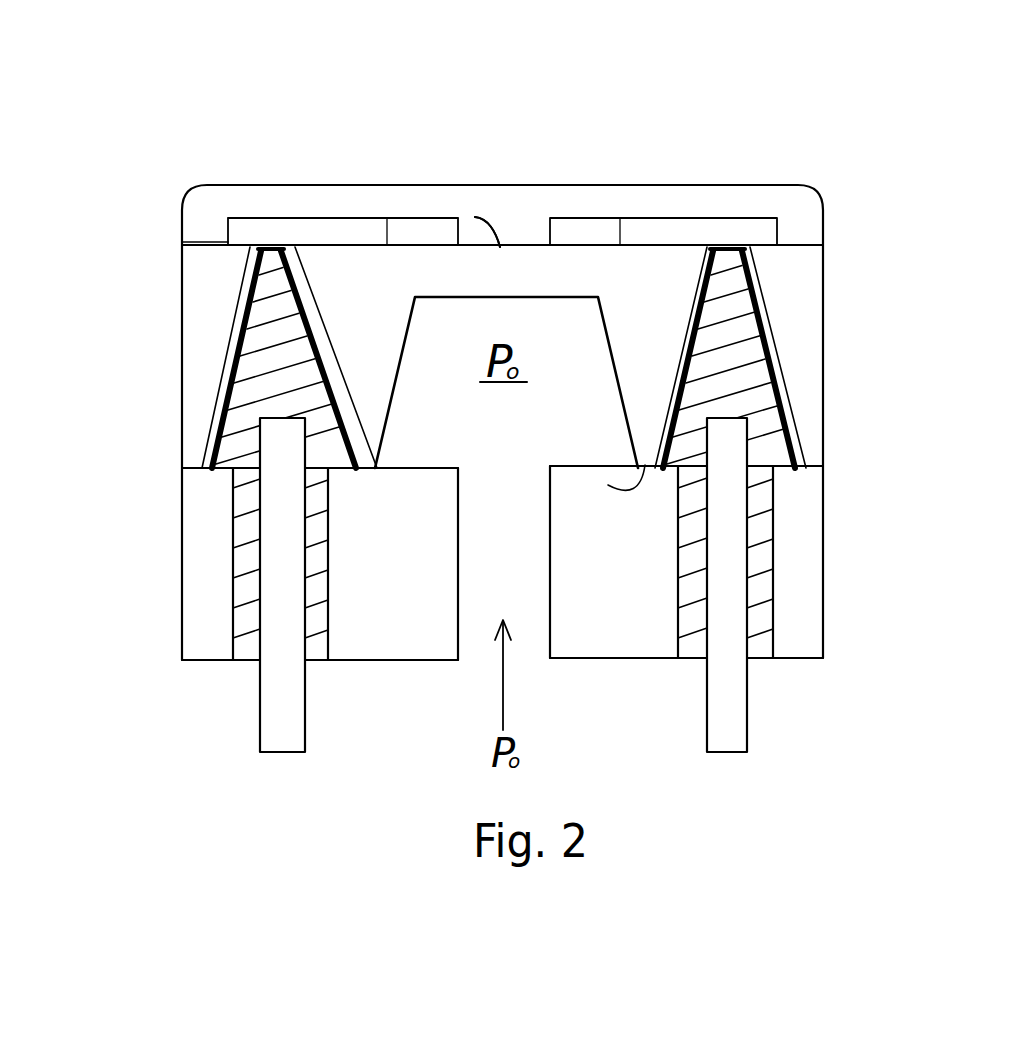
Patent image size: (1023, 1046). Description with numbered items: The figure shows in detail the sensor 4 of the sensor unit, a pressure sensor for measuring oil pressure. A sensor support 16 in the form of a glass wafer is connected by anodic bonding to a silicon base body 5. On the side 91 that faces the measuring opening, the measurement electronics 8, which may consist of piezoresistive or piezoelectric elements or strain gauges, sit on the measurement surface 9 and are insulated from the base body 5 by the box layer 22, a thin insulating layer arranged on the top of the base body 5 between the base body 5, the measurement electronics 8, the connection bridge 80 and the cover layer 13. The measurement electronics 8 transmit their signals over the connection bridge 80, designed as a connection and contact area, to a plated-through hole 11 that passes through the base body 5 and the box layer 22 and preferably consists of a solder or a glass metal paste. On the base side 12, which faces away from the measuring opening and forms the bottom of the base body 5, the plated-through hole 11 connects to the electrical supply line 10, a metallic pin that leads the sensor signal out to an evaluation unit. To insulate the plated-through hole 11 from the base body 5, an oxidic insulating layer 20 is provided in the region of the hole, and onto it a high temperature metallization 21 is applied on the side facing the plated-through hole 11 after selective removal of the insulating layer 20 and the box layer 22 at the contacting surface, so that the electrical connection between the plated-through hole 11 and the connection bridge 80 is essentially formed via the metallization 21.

The sensor 4 is at (852, 179).
The base body 5 is at (792, 288).
The measurement electronics 8 is at (587, 233).
The connection bridge 80 is at (327, 230).
The measurement surface 9 is at (497, 248).
The side facing the measuring opening 91 is at (574, 139).
The electrical supply line 10 is at (730, 495).
The plated-through hole 11 is at (248, 418).
The base side 12 is at (643, 467).
The cover layer 13 is at (243, 203).
The sensor support 16 is at (202, 503).
The insulating layer 20 is at (230, 378).
The metallization 21 is at (247, 325).
The box layer 22 is at (188, 242).